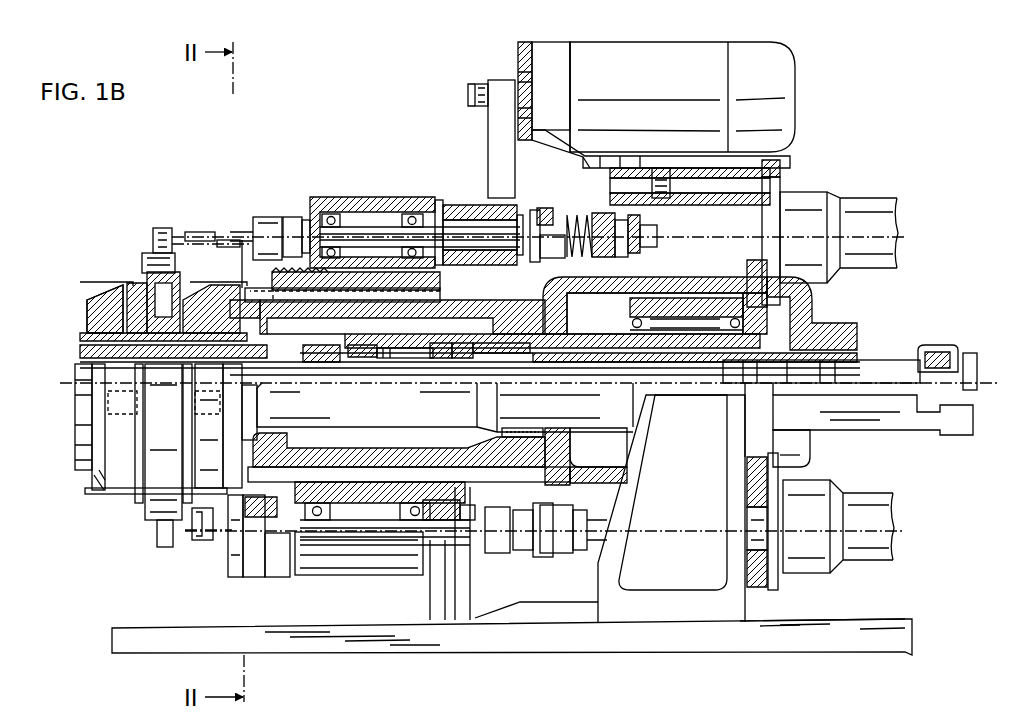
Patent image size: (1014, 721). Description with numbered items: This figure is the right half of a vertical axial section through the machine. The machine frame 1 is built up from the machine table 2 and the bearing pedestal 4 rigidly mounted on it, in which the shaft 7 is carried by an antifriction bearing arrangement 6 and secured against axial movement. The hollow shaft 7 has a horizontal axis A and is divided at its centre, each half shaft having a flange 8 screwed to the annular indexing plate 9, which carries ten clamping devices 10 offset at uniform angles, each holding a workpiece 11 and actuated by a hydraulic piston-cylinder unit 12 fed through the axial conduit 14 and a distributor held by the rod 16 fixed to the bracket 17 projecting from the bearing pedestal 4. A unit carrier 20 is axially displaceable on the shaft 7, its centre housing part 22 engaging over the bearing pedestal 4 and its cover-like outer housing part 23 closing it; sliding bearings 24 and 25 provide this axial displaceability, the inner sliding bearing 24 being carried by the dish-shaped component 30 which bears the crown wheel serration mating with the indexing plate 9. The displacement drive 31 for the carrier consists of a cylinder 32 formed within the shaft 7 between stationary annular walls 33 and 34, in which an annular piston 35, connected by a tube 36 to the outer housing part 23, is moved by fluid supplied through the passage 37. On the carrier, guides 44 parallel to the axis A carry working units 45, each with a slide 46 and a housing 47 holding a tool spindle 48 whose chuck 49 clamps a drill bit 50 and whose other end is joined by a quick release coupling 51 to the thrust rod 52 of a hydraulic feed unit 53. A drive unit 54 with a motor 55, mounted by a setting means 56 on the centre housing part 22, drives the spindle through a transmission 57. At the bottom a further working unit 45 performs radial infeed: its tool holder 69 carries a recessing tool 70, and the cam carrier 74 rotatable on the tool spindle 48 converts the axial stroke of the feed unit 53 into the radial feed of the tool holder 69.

The machine frame 1 is at (918, 640).
The machine table 2 is at (838, 628).
The bearing pedestal 4 is at (679, 605).
The antifriction bearing arrangement 6 is at (654, 335).
The shaft 7 is at (598, 340).
The flange 8 is at (114, 310).
The indexing plate 9 is at (130, 502).
The clamping device 10 is at (158, 228).
The workpiece 11 is at (180, 232).
The hydraulic piston-cylinder unit 12 is at (140, 275).
The axial conduit 14 is at (133, 455).
The rod 16 is at (893, 360).
The bracket 17 is at (910, 420).
The unit carrier 20 is at (289, 448).
The centre housing part 22 is at (563, 490).
The outer housing part 23 is at (810, 450).
The sliding bearing 24 is at (90, 320).
The sliding bearing 25 is at (520, 428).
The dish-shaped component 30 is at (95, 306).
The displacement drive 31 is at (383, 360).
The cylinder 32 is at (404, 358).
The annular wall 33 is at (322, 362).
The annular wall 34 is at (443, 356).
The annular piston 35 is at (353, 358).
The tube 36 is at (712, 352).
The passage 37 is at (84, 345).
The guide 44 is at (255, 288).
The working unit 45 is at (362, 196).
The slide 46 is at (293, 272).
The housing 47 is at (400, 578).
The tool spindle 48 is at (392, 227).
The chuck 49 is at (267, 215).
The drill bit 50 is at (227, 236).
The quick release coupling 51 is at (558, 212).
The thrust rod 52 is at (772, 228).
The feed unit 53 is at (868, 190).
The drive unit 54 is at (800, 72).
The motor 55 is at (690, 44).
The setting means 56 is at (793, 168).
The transmission 57 is at (483, 160).
The tool holder 69 is at (230, 563).
The recessing tool 70 is at (192, 525).
The cam carrier 74 is at (265, 510).
The axis A is at (968, 378).